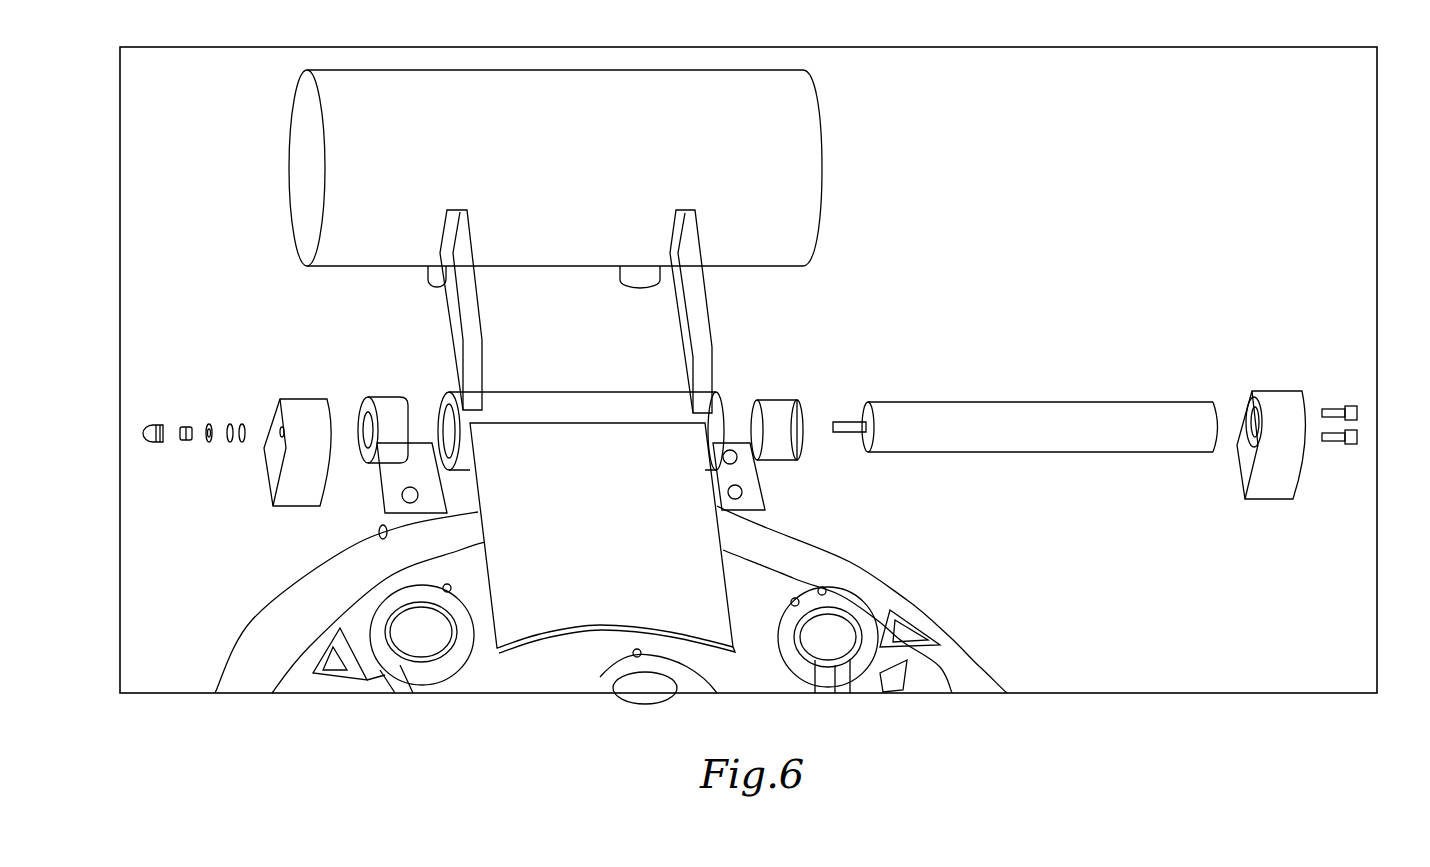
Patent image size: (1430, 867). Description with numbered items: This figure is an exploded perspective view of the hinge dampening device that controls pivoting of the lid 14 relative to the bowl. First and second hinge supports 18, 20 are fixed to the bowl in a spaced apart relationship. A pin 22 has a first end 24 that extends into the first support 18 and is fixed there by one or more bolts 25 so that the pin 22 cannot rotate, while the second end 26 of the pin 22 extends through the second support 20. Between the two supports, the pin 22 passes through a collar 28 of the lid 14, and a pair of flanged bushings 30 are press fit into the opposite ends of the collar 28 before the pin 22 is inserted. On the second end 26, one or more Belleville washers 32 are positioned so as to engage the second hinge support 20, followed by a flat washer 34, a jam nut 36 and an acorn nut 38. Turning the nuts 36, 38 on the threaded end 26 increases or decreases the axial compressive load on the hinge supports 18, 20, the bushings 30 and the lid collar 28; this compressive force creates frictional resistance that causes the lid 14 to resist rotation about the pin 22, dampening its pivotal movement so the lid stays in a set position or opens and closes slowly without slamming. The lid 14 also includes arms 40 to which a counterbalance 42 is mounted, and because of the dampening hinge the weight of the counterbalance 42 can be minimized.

The lid 14 is at (765, 600).
The first hinge support 18 is at (1280, 400).
The second hinge support 20 is at (305, 404).
The pin 22 is at (1030, 413).
The first end 24 is at (1210, 400).
The bolts 25 is at (1358, 437).
The second end 26 is at (846, 420).
The collar 28 is at (598, 402).
The flanged bushings 30 is at (385, 407).
The Belleville washers 32 is at (242, 444).
The flat washer 34 is at (208, 425).
The jam nut 36 is at (186, 442).
The acorn nut 38 is at (146, 433).
The arms 40 is at (468, 297).
The counterbalance 42 is at (800, 114).